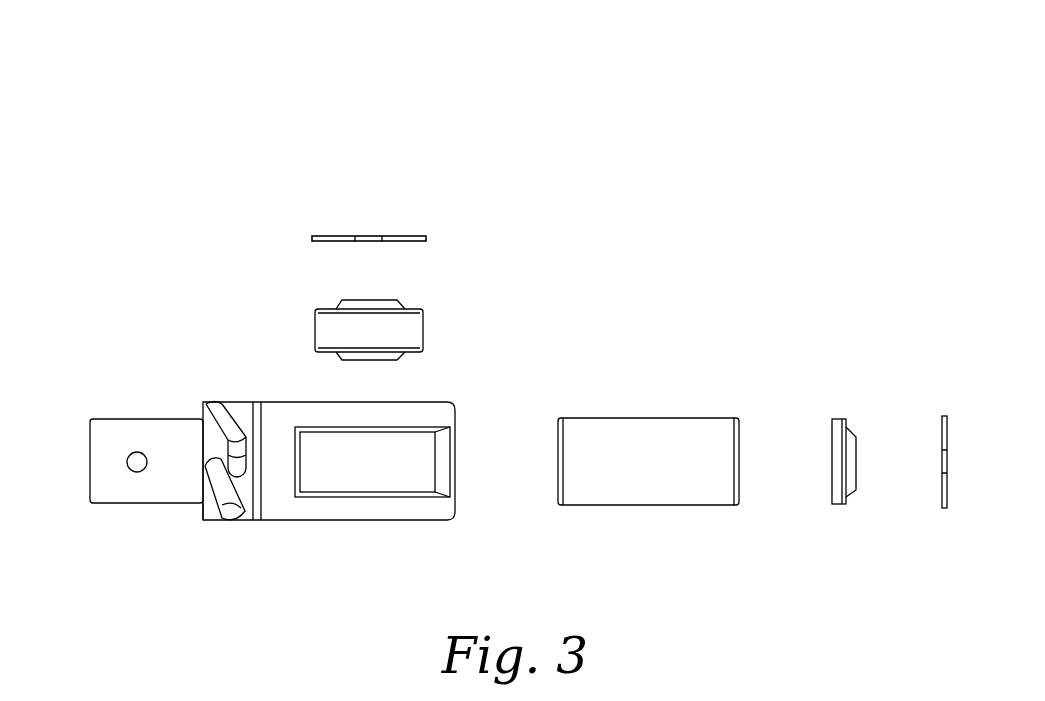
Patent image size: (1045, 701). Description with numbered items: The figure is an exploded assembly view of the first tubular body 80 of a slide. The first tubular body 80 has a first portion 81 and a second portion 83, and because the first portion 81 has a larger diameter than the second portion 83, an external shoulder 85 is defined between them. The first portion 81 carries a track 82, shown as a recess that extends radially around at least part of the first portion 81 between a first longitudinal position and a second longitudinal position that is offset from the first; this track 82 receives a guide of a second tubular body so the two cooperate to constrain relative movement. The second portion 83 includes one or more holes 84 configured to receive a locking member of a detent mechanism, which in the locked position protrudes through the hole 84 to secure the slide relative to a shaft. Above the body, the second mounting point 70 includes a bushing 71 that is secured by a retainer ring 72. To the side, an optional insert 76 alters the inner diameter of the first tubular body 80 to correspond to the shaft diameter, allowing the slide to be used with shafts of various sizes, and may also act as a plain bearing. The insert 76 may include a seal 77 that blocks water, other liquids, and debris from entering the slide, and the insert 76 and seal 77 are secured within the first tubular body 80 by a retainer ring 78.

The second mounting point 70 is at (423, 449).
The bushing 71 is at (413, 328).
The retainer ring 72 is at (408, 236).
The insert 76 is at (640, 443).
The seal 77 is at (838, 428).
The retainer ring 78 is at (942, 425).
The first tubular body 80 is at (490, 108).
The first portion 81 is at (372, 481).
The track 82 is at (222, 403).
The second portion 83 is at (203, 393).
The hole 84 is at (130, 462).
The external shoulder 85 is at (197, 511).